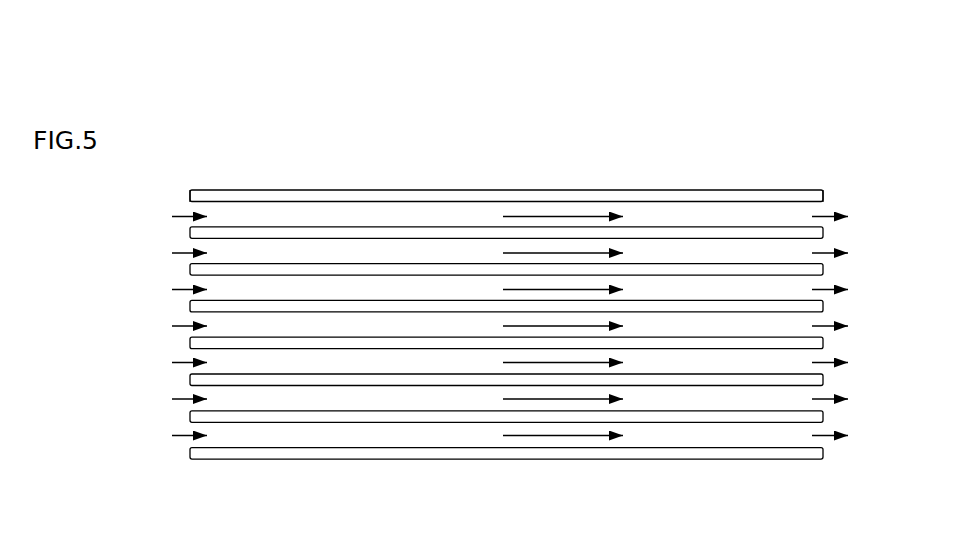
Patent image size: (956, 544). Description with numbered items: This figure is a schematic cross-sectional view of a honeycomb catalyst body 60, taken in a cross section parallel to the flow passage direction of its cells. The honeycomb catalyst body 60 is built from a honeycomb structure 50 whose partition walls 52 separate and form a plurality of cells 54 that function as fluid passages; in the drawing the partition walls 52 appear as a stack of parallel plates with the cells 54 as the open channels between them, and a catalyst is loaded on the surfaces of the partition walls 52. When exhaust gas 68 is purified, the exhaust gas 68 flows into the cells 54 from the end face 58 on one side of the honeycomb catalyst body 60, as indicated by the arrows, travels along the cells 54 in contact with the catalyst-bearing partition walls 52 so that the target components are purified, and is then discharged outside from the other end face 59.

The honeycomb structure 50 is at (450, 190).
The partition walls 52 is at (397, 378).
The cells 54 is at (688, 253).
The end face 58 is at (192, 189).
The other end face 59 is at (823, 188).
The honeycomb catalyst body 60 is at (697, 31).
The exhaust gas 68 is at (172, 290).